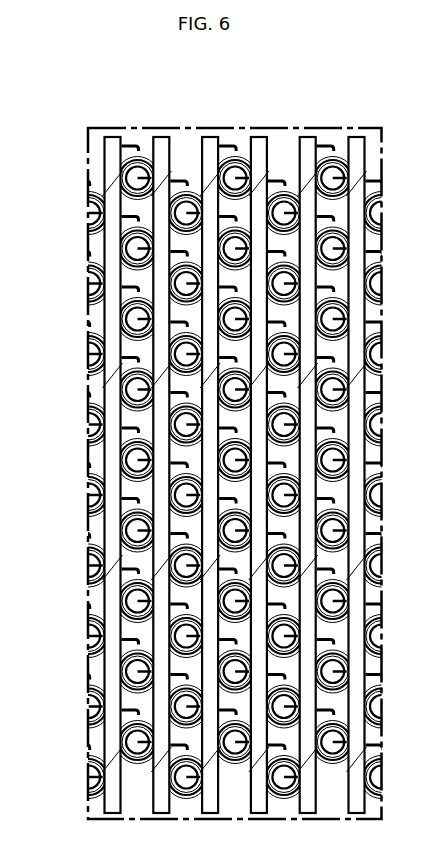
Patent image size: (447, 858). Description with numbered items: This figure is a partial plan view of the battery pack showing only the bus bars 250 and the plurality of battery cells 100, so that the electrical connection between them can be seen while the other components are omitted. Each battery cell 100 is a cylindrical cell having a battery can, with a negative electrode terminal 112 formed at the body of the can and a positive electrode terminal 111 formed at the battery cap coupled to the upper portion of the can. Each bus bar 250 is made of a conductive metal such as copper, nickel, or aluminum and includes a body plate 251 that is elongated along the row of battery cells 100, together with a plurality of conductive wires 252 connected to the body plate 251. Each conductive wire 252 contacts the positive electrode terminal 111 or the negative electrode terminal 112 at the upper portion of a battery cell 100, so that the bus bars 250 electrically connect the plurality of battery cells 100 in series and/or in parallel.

The battery cell 100 is at (216, 472).
The positive electrode terminal 111 is at (235, 478).
The negative electrode terminal 112 is at (235, 477).
The bus bar 250 is at (210, 138).
The body plate 251 is at (108, 150).
The conductive wire 252 is at (123, 303).